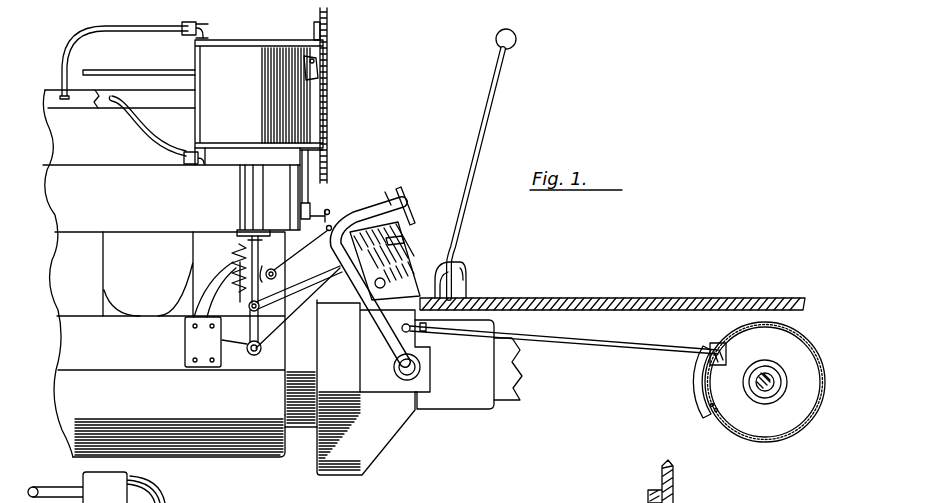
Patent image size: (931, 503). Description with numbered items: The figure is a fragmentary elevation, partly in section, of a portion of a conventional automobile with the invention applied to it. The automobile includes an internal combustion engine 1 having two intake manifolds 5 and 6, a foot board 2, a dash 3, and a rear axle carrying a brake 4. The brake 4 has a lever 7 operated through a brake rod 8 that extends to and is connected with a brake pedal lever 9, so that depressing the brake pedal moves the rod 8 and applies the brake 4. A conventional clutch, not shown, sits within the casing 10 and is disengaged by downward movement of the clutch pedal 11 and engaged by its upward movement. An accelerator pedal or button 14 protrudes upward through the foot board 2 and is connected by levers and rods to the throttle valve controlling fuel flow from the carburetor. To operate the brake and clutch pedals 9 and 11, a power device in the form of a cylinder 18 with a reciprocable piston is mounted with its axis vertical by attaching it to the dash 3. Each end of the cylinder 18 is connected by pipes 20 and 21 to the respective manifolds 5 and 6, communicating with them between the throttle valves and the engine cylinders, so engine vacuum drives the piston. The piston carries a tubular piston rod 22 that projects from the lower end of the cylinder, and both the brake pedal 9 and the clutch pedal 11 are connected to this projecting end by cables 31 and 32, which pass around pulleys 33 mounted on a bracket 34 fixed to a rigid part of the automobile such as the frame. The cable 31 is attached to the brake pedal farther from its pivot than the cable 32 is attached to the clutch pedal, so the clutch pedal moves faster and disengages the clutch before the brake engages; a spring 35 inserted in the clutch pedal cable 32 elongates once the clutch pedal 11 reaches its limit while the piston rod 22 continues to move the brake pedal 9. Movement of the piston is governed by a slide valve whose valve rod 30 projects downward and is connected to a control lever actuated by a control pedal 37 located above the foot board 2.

The engine 1 is at (223, 402).
The foot board 2 is at (333, 213).
The dash 3 is at (328, 80).
The brake 4 is at (738, 425).
The intake manifold 5 is at (52, 90).
The intake manifold 6 is at (125, 90).
The lever 7 is at (707, 380).
The brake rod 8 is at (580, 368).
The brake pedal lever 9 is at (362, 207).
The casing 10 is at (350, 395).
The clutch pedal 11 is at (400, 204).
The accelerator pedal or button 14 is at (398, 230).
The cylinder 18 is at (228, 57).
The pipe 20 is at (165, 27).
The pipe 21 is at (140, 123).
The piston rod 22 is at (248, 190).
The valve rod 30 is at (243, 245).
The cable 31 is at (304, 253).
The cable 32 is at (297, 318).
The pulleys 33 is at (266, 345).
The bracket 34 is at (205, 338).
The spring 35 is at (233, 262).
The control pedal 37 is at (452, 262).